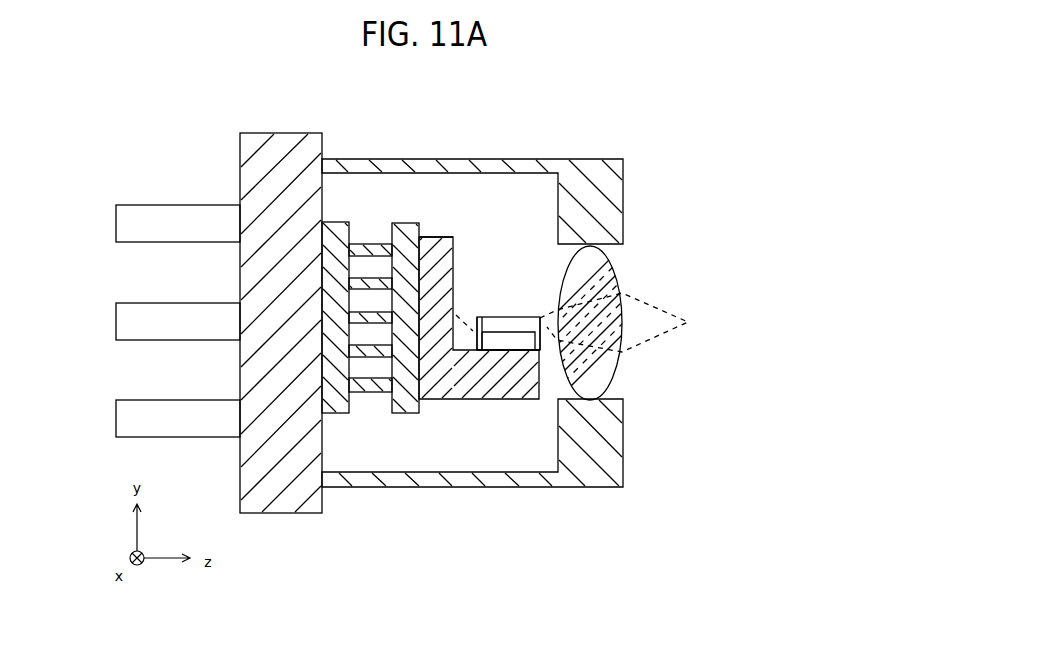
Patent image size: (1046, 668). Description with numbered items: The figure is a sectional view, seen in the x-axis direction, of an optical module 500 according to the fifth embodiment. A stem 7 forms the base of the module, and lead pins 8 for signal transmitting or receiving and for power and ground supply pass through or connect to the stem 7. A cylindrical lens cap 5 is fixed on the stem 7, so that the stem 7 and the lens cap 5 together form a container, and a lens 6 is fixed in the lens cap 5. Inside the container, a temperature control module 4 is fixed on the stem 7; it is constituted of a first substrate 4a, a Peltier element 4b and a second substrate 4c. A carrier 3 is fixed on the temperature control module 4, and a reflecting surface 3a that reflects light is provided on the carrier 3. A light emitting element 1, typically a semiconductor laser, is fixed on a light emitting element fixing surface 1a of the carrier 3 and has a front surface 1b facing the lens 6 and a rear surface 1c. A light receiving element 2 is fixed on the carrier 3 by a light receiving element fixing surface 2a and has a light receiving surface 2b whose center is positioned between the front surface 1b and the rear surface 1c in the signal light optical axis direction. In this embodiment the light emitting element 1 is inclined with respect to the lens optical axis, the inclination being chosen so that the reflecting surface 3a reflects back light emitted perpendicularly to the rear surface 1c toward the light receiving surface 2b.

The optical module 500 is at (214, 93).
The stem 7 is at (258, 514).
The lead pins 8 is at (137, 205).
The cylindrical lens cap 5 is at (596, 166).
The temperature control module 4 is at (370, 323).
The first substrate 4a is at (340, 233).
The Peltier element 4b is at (350, 222).
The second substrate 4c is at (409, 234).
The carrier 3 is at (430, 400).
The reflecting surface 3a is at (454, 243).
The light emitting element 1 is at (523, 317).
The light emitting element fixing surface 1a is at (524, 352).
The front surface 1b is at (547, 317).
The rear surface 1c is at (478, 317).
The light receiving element 2 is at (492, 317).
The light receiving element fixing surface 2a is at (495, 352).
The light receiving surface 2b is at (497, 352).
The lens 6 is at (613, 379).